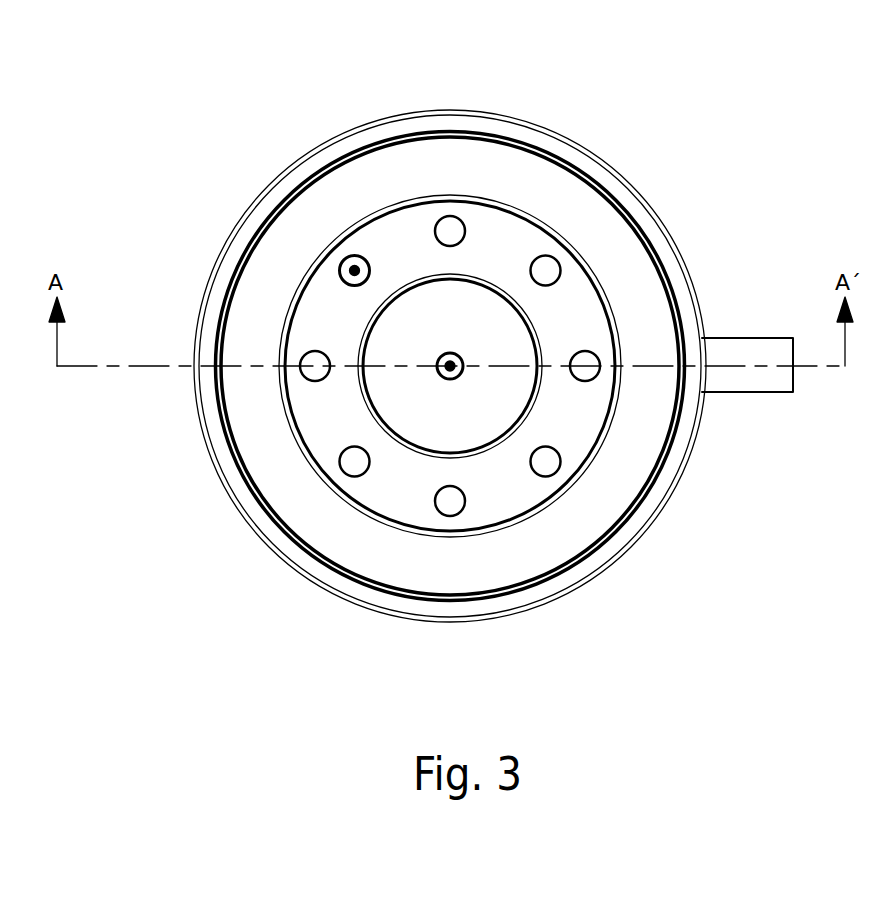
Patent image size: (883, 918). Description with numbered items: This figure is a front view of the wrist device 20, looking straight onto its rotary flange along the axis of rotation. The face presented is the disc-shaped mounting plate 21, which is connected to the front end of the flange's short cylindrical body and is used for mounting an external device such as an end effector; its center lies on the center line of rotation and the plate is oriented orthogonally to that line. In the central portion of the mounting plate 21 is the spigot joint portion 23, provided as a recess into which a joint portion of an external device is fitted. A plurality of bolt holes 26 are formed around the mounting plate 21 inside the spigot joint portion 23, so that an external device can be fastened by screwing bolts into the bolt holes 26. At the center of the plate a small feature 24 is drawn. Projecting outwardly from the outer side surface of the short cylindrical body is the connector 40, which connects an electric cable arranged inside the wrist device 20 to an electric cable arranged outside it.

The wrist device 20 is at (686, 173).
The mounting plate 21 is at (437, 158).
The spigot joint portion 23 is at (385, 400).
The center hole 24 is at (451, 380).
The bolt holes 26 is at (342, 263).
The connector 40 is at (757, 395).